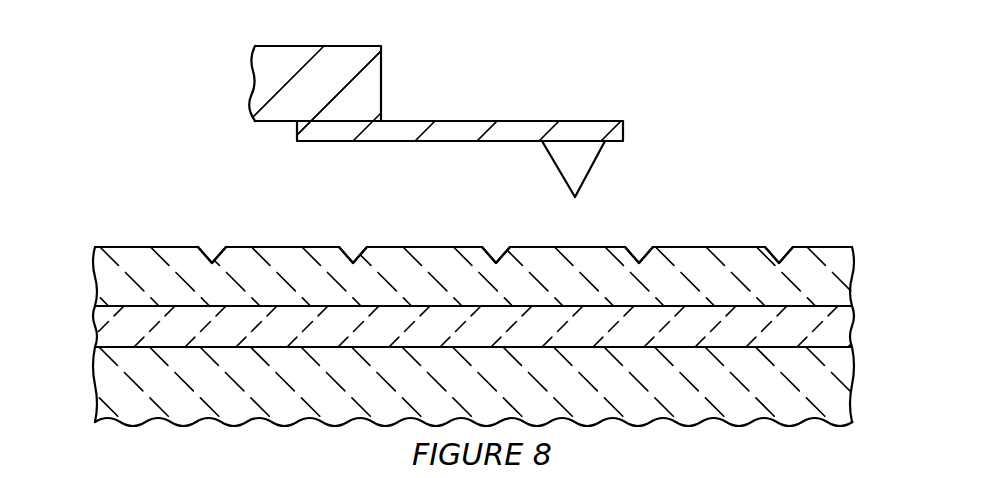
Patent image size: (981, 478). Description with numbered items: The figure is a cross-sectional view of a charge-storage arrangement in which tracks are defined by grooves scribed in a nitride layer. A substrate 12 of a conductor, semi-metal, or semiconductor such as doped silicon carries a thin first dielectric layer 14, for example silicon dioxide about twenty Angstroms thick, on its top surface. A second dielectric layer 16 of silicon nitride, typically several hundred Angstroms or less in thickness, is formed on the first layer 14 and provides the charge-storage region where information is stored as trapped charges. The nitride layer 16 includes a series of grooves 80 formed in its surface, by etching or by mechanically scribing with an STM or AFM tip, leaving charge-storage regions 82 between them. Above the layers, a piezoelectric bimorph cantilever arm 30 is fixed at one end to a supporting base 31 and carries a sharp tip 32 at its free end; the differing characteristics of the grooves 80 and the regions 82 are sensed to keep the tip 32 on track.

The substrate 12 is at (92, 382).
The first dielectric layer 14 is at (92, 315).
The second dielectric layer 16 is at (92, 270).
The piezoelectric bimorph cantilever arm 30 is at (590, 121).
The supporting base 31 is at (382, 72).
The tip 32 is at (590, 170).
The grooves 80 is at (198, 246).
The charge-storage regions 82 is at (140, 256).